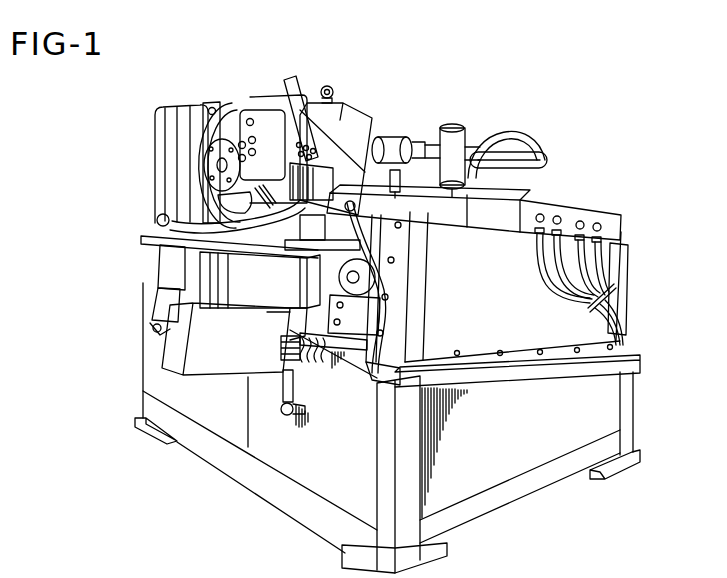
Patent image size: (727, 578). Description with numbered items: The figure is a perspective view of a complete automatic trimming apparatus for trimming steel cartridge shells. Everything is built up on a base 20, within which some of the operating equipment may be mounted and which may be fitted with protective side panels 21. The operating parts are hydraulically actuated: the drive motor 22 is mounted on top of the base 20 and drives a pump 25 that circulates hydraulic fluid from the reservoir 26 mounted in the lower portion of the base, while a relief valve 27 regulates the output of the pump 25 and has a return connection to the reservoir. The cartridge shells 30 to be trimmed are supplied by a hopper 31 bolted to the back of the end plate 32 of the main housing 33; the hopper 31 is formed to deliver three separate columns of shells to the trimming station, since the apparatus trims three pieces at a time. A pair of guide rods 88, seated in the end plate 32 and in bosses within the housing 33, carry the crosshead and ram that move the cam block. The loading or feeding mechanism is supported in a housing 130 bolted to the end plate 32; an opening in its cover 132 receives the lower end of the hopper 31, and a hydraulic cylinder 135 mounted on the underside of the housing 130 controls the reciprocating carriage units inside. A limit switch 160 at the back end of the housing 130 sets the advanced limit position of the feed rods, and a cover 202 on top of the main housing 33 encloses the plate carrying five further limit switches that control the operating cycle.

The base 20 is at (285, 518).
The protective side panels 21 is at (273, 450).
The drive motor 22 is at (240, 110).
The pump 25 is at (403, 137).
The reservoir 26 is at (143, 357).
The relief valve 27 is at (453, 128).
The cartridge shells 30 is at (297, 80).
The hopper 31 is at (350, 123).
The end plate 32 is at (370, 240).
The main housing 33 is at (617, 260).
The guide rods 88 is at (387, 280).
The housing 130 is at (250, 298).
The cover 132 is at (257, 247).
The hydraulic cylinder 135 is at (297, 370).
The limit switch 160 is at (157, 302).
The cover 202 is at (520, 205).